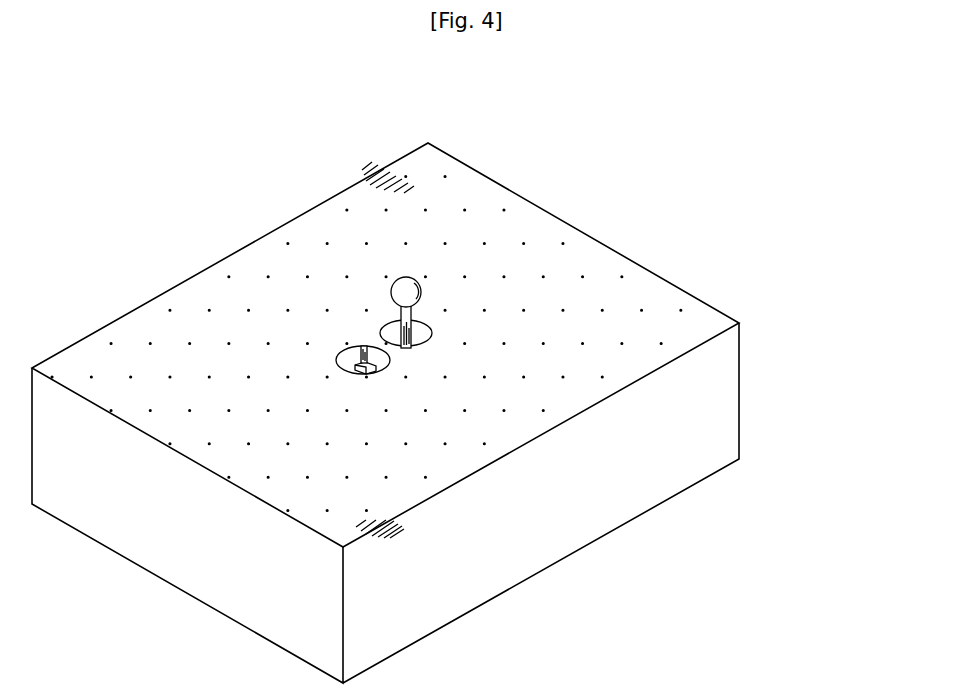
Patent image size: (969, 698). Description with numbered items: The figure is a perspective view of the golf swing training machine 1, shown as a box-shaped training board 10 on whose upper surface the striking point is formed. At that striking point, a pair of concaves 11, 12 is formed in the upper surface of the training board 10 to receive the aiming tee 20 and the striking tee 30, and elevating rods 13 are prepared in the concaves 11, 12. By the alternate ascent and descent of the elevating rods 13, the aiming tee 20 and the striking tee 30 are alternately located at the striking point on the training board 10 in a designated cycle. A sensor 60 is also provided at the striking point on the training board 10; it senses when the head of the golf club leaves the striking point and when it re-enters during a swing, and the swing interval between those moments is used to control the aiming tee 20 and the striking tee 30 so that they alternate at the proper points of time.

The golf swing training machine 1 is at (236, 184).
The training board 10 is at (652, 285).
The concave 11 is at (337, 353).
The concave 12 is at (395, 318).
The elevating rod 13 is at (430, 331).
The aiming tee 20 is at (390, 358).
The striking tee 30 is at (420, 303).
The sensor 60 is at (388, 346).